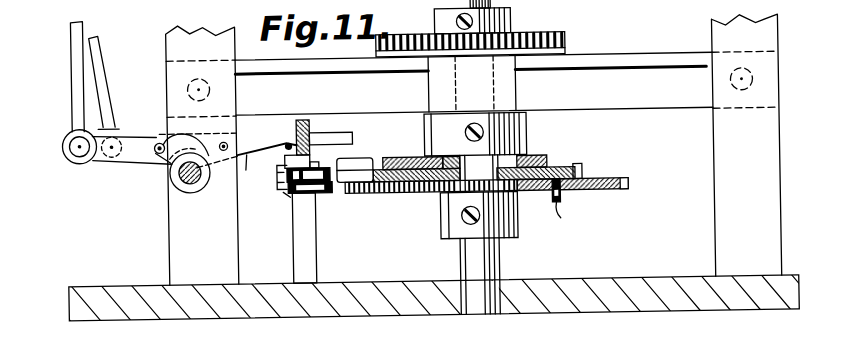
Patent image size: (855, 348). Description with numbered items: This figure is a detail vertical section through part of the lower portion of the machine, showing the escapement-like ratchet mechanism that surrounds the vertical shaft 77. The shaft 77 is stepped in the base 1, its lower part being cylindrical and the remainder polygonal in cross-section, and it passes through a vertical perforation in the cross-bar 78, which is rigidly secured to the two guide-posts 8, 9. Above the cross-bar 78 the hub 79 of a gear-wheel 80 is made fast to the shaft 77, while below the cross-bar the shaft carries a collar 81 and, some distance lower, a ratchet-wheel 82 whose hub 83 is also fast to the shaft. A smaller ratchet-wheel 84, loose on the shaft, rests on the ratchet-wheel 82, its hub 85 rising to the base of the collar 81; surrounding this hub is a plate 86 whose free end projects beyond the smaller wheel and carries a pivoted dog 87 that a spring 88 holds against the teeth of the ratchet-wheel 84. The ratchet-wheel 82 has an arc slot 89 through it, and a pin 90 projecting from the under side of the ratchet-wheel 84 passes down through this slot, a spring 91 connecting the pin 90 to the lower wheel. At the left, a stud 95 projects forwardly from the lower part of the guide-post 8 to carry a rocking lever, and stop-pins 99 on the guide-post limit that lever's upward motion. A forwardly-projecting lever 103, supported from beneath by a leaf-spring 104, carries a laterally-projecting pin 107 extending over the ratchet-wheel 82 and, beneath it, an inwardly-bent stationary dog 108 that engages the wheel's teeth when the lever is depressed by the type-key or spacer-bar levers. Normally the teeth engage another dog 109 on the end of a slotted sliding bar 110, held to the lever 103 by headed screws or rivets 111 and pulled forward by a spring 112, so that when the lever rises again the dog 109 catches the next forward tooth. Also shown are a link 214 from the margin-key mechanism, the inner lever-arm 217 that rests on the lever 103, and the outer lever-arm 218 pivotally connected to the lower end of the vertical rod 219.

The base 1 is at (637, 279).
The guide-post 8 is at (202, 155).
The guide-post 9 is at (746, 145).
The vertical shaft 77 is at (498, 257).
The cross-bar 78 is at (638, 57).
The hub 79 is at (442, 15).
The gear-wheel 80 is at (568, 43).
The collar 81 is at (475, 134).
The ratchet-wheel 82 is at (392, 194).
The hub 83 is at (440, 219).
The ratchet-wheel 84 is at (573, 166).
The hub 85 is at (450, 157).
The plate 86 is at (391, 162).
The pivoted dog 87 is at (372, 163).
The spring 88 is at (357, 160).
The arc slot 89 is at (561, 195).
The pin 90 is at (552, 203).
The spring 91 is at (560, 220).
The stud 95 is at (193, 190).
The stop-pins 99 is at (174, 135).
The lever 103 is at (303, 118).
The leaf-spring 104 is at (311, 268).
The laterally-projecting pin 107 is at (338, 136).
The stationary dog 108 is at (314, 167).
The dog 109 is at (322, 192).
The slotted sliding bar 110 is at (284, 197).
The headed screws or rivets 111 is at (280, 188).
The spring 112 is at (286, 140).
The link 214 is at (108, 106).
The inner lever-arm 217 is at (256, 169).
The outer lever-arm 218 is at (164, 149).
The vertical rod 219 is at (70, 108).